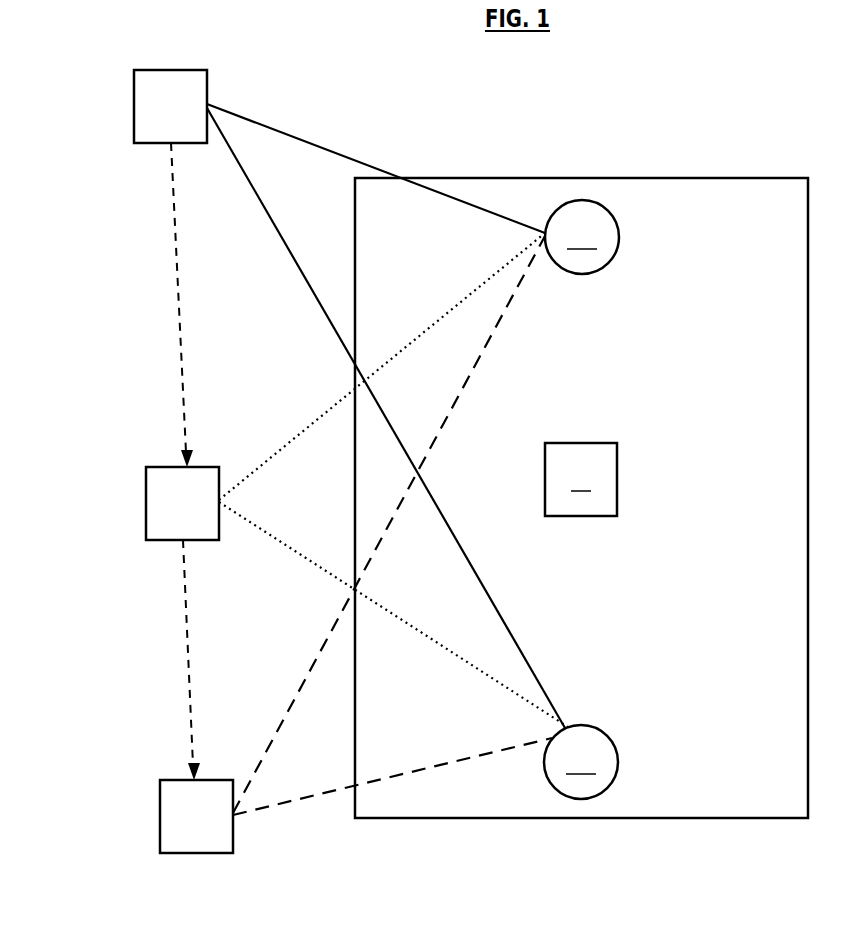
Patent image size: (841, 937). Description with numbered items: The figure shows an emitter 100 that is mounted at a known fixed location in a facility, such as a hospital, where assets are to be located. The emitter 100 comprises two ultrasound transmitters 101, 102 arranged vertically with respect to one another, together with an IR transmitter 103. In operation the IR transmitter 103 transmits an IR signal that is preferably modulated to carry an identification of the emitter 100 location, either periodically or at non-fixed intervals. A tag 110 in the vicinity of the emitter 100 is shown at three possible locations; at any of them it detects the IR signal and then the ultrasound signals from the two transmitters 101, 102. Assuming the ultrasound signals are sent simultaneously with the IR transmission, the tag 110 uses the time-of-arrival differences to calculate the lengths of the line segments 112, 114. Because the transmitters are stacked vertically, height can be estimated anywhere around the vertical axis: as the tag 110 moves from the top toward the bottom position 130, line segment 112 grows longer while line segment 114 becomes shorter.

The emitter 100 is at (732, 384).
The ultrasound transmitter 101 is at (618, 244).
The ultrasound transmitter 102 is at (616, 754).
The IR transmitter 103 is at (617, 470).
The tag 110 is at (188, 117).
The line segment 112 is at (307, 143).
The line segment 114 is at (270, 213).
The position 130 is at (121, 891).